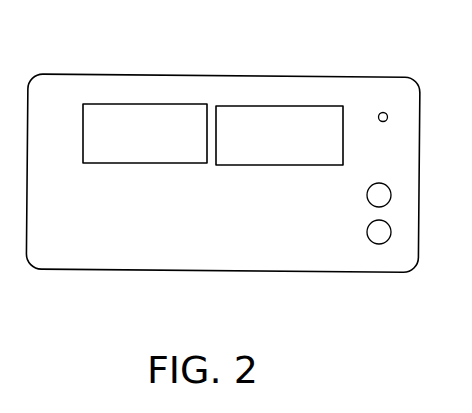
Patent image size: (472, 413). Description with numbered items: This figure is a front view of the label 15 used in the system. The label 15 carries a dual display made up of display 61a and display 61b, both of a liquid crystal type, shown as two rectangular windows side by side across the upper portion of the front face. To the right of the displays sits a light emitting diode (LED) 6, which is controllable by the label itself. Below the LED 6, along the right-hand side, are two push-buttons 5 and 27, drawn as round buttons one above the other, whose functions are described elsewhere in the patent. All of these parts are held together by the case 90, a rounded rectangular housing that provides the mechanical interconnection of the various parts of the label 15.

The case 90 is at (60, 82).
The label 15 is at (244, 48).
The display 61a is at (147, 163).
The display 61b is at (279, 167).
The light emitting diode (LED) 6 is at (380, 112).
The push-button 27 is at (369, 205).
The push-button 5 is at (378, 245).